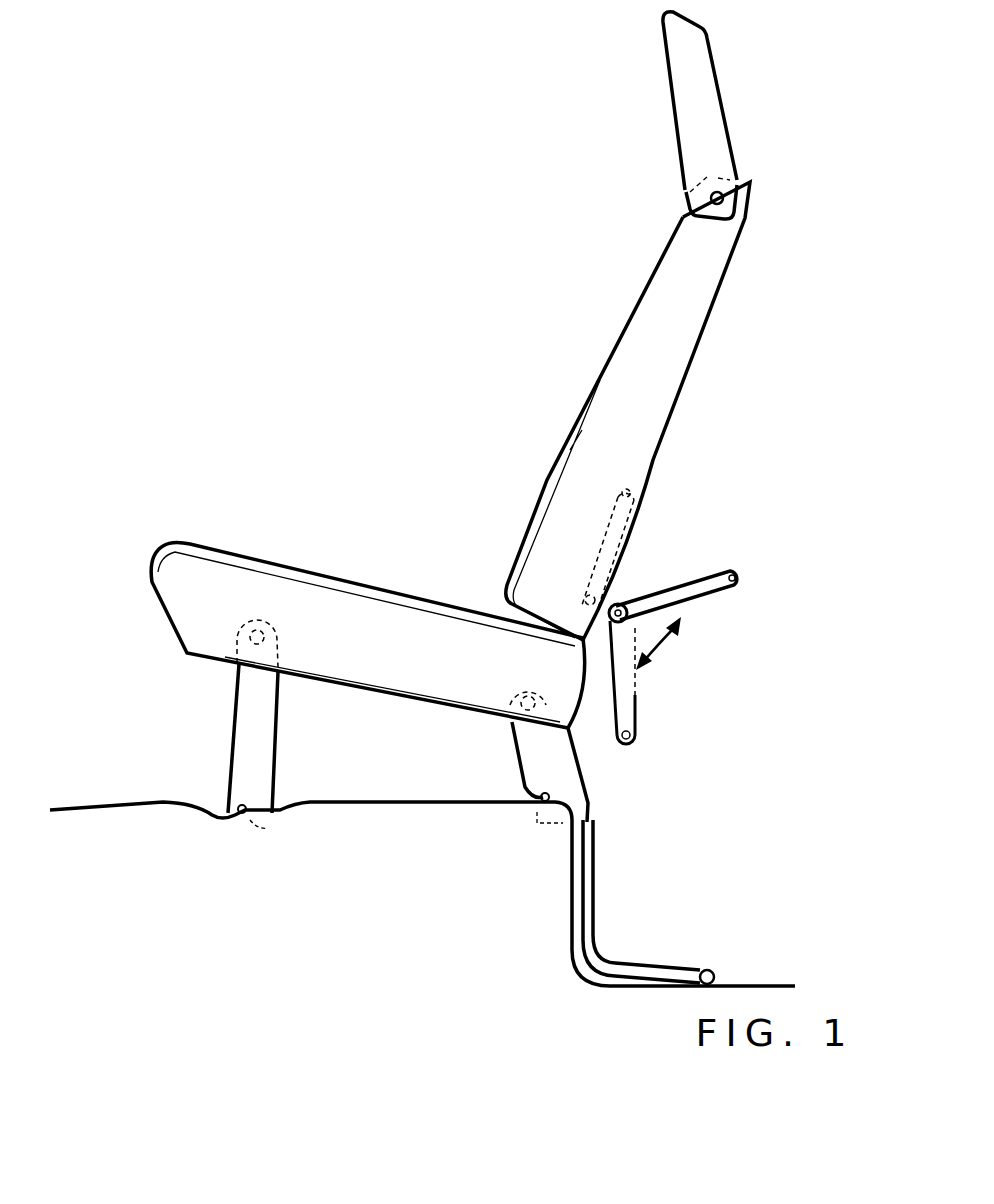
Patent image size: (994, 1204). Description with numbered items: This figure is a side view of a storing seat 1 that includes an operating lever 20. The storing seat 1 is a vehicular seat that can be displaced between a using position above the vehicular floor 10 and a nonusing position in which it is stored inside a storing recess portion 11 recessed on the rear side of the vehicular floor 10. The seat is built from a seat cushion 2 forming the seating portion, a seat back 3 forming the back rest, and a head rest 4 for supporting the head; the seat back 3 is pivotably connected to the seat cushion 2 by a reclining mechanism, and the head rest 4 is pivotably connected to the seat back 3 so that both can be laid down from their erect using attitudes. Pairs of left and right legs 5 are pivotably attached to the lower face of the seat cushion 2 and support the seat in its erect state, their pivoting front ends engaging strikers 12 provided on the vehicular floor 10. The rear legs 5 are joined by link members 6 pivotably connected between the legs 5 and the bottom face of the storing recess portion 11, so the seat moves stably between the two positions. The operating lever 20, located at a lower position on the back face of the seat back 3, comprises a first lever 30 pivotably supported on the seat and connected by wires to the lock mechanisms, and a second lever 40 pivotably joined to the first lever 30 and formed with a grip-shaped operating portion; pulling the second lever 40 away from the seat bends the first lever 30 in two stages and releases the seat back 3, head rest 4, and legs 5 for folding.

The storing seat 1 is at (465, 586).
The seat cushion 2 is at (220, 573).
The seat back 3 is at (682, 343).
The head rest 4 is at (712, 124).
The leg 5 is at (248, 700).
The link member 6 is at (593, 947).
The vehicular floor 10 is at (137, 802).
The storing recess portion 11 is at (768, 985).
The striker 12 is at (244, 814).
The operating lever 20 is at (678, 473).
The first lever 30 is at (627, 571).
The second lever 40 is at (717, 577).